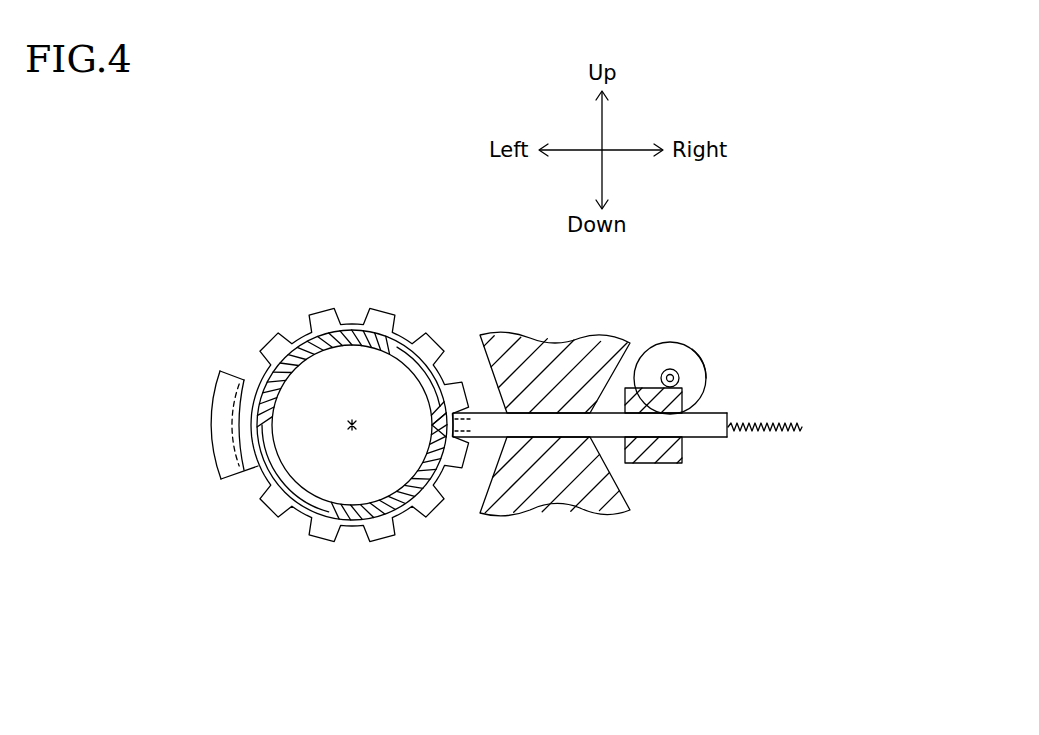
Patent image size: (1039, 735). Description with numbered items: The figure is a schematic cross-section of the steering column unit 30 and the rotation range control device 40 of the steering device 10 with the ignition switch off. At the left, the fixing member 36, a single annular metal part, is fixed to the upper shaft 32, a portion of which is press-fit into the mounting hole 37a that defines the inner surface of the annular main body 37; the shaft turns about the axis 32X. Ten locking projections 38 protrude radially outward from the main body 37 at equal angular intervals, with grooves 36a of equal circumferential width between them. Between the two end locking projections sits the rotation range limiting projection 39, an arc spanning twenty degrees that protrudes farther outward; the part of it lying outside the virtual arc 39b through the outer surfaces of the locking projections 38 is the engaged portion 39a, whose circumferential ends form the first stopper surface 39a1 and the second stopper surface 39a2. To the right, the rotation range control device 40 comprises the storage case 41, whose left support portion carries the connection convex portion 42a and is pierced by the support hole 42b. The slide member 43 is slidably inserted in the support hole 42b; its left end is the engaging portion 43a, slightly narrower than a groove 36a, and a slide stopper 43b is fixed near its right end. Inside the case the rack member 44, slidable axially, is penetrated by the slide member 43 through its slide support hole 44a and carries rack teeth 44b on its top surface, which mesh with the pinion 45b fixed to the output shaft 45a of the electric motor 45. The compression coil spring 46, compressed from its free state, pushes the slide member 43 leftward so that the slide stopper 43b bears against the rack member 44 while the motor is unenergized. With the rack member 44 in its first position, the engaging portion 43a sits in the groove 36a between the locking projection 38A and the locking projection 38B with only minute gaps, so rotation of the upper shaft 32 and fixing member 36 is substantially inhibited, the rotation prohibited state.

The steering device 10 is at (387, 607).
The steering column unit 30 is at (302, 605).
The upper shaft 32 is at (354, 340).
The axis 32X is at (350, 428).
The fixing member 36 is at (361, 429).
The grooves 36a is at (247, 348).
The main body 37 is at (330, 345).
The mounting hole 37a is at (310, 350).
The locking projections 38 is at (263, 328).
The locking projection 38A is at (458, 378).
The locking projection 38B is at (463, 468).
The rotation range limiting projection 39 is at (195, 419).
The engaged portion 39a is at (222, 383).
The first stopper surface 39a1 is at (235, 483).
The second stopper surface 39a2 is at (226, 368).
The virtual arc 39b is at (226, 420).
The rotation range control device 40 is at (615, 602).
The storage case 41 is at (555, 418).
The connection convex portion 42a is at (508, 338).
The support hole 42b is at (565, 437).
The slide member 43 is at (555, 467).
The engaging portion 43a is at (452, 410).
The slide stopper 43b is at (715, 438).
The rack member 44 is at (652, 429).
The slide support hole 44a is at (648, 437).
The rack teeth 44b is at (632, 387).
The electric motor 45 is at (700, 348).
The output shaft 45a is at (670, 368).
The pinion 45b is at (707, 357).
The compression coil spring 46 is at (793, 430).